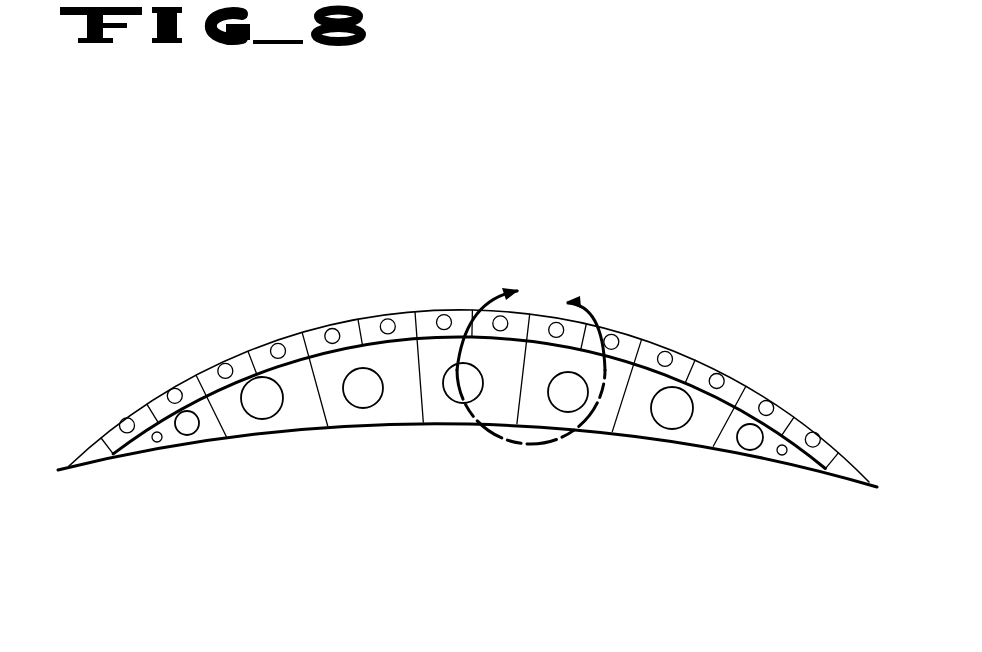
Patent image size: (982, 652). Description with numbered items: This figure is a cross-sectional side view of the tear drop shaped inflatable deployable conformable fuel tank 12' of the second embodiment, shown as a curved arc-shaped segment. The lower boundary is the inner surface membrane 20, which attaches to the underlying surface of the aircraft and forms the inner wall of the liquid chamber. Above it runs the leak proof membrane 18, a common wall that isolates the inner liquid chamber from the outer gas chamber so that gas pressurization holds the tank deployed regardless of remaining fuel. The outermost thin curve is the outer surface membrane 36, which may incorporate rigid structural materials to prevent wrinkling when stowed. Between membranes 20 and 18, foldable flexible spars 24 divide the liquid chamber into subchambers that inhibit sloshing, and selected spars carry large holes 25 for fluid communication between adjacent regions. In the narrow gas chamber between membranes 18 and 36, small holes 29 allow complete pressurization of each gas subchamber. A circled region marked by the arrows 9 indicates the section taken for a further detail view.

The inflatable deployable conformable fuel tank 12' is at (469, 364).
The leak proof membrane 18 is at (710, 394).
The inner surface membrane 20 is at (399, 427).
The spars 24 is at (413, 397).
The holes 25 is at (248, 386).
The holes 29 is at (168, 392).
The outer surface membrane 36 is at (383, 314).
The section line 9- 9 is at (531, 352).